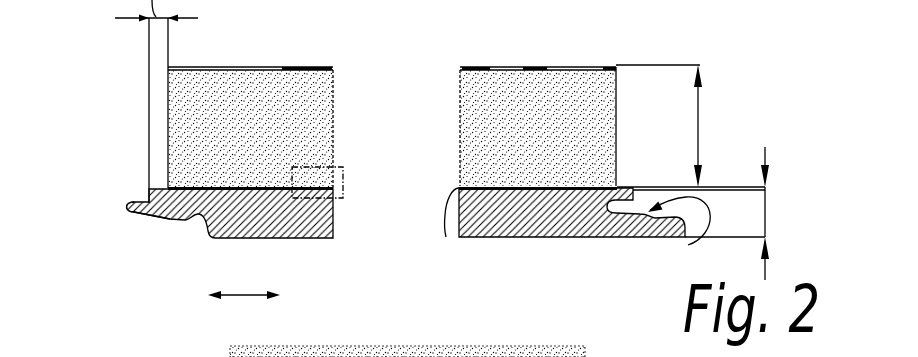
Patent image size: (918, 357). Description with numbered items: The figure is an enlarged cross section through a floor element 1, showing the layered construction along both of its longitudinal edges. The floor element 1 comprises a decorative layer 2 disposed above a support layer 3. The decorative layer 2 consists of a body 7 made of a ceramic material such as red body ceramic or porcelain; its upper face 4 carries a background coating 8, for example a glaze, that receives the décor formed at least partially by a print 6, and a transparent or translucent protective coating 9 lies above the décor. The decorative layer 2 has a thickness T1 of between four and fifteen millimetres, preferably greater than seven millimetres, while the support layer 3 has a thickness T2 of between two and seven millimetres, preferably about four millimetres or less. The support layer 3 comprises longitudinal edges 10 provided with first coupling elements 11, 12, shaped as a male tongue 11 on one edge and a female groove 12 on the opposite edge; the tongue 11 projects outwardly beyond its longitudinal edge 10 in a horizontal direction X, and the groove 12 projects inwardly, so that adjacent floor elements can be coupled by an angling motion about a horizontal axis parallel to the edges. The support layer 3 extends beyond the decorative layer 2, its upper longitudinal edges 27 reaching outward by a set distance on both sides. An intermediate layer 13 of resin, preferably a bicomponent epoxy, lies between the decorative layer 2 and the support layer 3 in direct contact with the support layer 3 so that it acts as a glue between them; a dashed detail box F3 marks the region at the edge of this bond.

The floor element 1 is at (227, 45).
The decorative layer 2 is at (168, 123).
The support layer 3 is at (537, 237).
The upper face 4 is at (327, 66).
The print 6 is at (293, 66).
The body 7 is at (176, 153).
The background coating 8 is at (462, 69).
The protective coating 9 is at (462, 68).
The longitudinal edges 10 is at (125, 232).
The tongue 11 is at (170, 219).
The groove 12 is at (690, 242).
The intermediate layer 13 is at (444, 210).
The upper longitudinal edges 27 is at (147, 188).
The thickness of the decorative layer T1 is at (700, 123).
The thickness of the support layer T2 is at (767, 203).
The horizontal direction X is at (248, 294).
The detail F3 is at (343, 181).